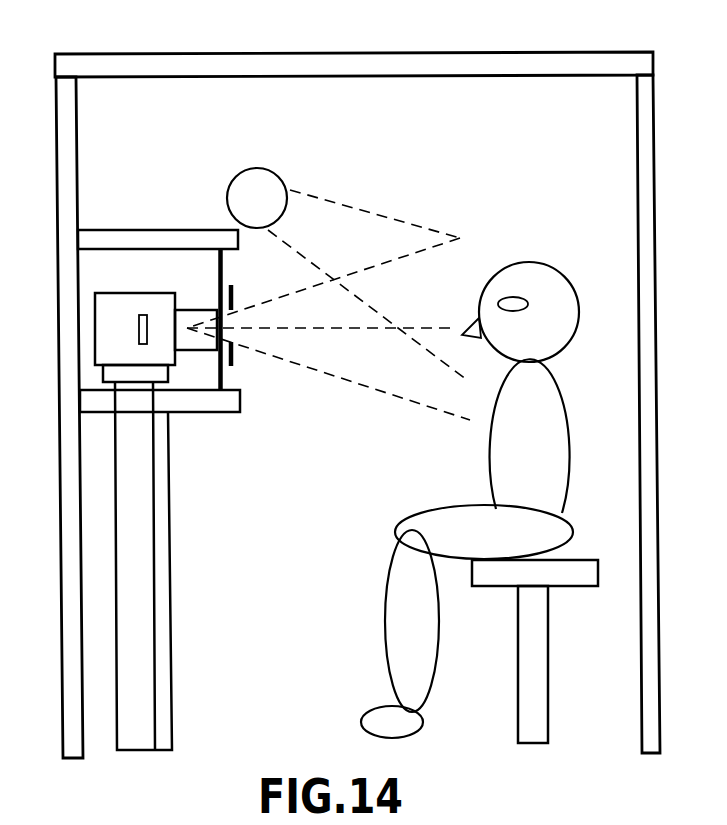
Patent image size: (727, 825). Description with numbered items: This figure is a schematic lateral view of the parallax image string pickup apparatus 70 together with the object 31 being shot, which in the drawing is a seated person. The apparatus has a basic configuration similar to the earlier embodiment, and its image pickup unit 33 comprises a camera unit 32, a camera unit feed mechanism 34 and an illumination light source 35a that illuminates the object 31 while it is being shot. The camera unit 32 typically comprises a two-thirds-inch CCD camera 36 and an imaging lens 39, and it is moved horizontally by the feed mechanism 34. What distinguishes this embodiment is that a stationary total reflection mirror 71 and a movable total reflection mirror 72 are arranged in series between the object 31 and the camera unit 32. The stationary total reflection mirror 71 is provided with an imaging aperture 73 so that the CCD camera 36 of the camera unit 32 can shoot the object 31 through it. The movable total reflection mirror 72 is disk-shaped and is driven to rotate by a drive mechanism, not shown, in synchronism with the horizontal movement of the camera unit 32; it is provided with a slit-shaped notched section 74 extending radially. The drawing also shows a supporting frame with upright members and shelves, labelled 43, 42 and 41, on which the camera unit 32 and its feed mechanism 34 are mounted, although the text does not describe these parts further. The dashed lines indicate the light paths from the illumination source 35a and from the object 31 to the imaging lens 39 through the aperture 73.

The parallax image string pickup apparatus 70 is at (405, 47).
The left post 43 is at (74, 294).
The upper shelf 42 is at (99, 235).
The lower shelf 41 is at (95, 402).
The image pickup unit 33 is at (272, 414).
The CCD camera 36 is at (137, 303).
The camera unit 32 is at (181, 378).
The imaging lens 39 is at (192, 308).
The camera unit feed mechanism 34 is at (142, 373).
The slit-shaped notched section 74 is at (229, 319).
The movable total reflection mirror 72 is at (233, 366).
The imaging aperture 73 is at (246, 339).
The stationary total reflection mirror 71 is at (238, 357).
The illumination light source 35a is at (260, 180).
The object 31 is at (555, 418).